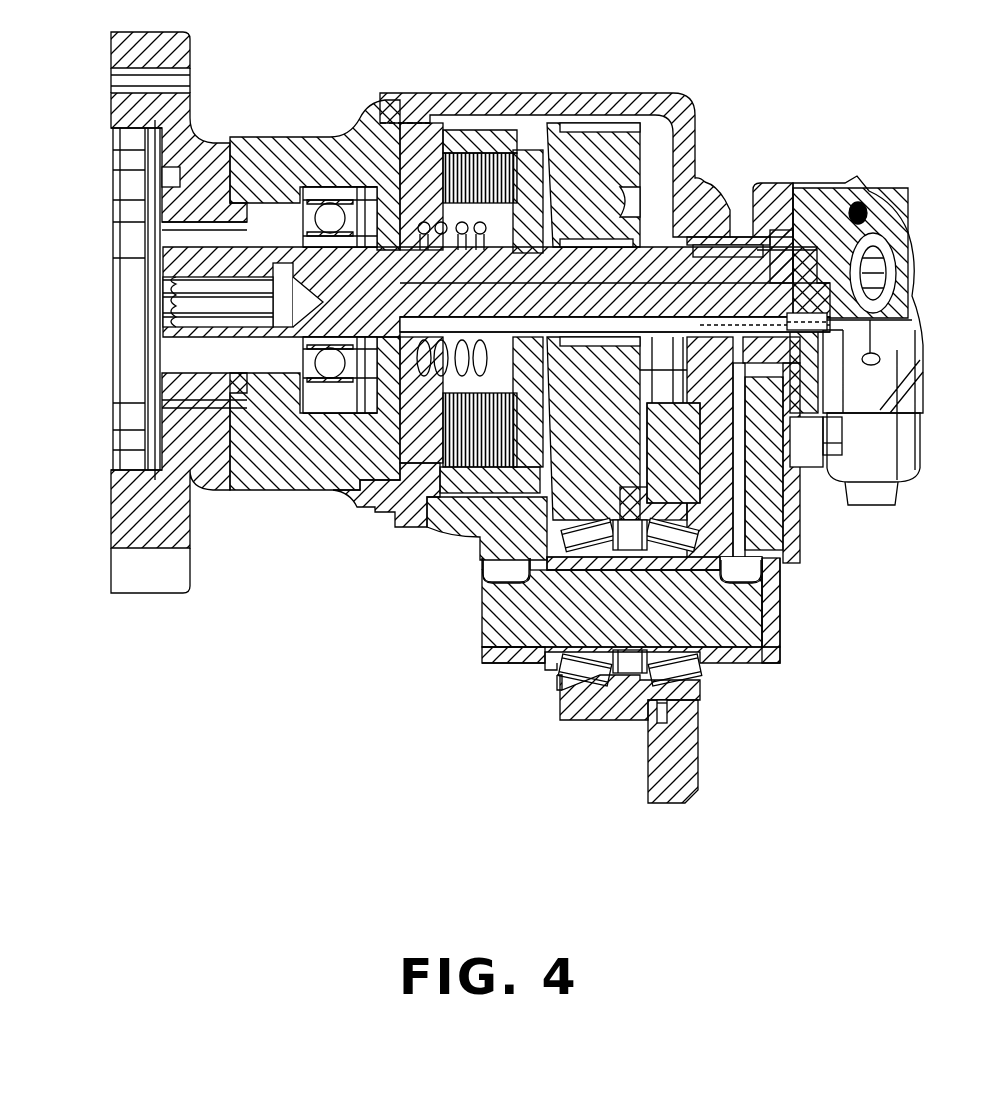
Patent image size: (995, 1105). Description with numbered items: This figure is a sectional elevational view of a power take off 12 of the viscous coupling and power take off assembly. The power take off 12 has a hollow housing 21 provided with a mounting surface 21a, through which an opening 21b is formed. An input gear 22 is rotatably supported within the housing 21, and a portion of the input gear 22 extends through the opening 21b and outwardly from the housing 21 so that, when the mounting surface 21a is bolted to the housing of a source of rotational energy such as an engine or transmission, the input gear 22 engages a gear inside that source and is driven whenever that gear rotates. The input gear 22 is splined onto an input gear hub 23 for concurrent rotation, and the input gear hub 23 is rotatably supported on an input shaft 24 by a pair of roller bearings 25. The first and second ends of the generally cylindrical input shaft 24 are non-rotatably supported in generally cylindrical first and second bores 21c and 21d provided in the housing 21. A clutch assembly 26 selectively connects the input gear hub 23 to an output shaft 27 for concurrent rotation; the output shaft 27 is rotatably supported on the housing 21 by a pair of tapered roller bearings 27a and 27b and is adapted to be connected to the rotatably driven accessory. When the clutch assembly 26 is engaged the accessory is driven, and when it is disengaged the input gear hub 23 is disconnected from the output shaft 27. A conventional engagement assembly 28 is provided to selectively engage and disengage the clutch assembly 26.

The power take off 12 is at (832, 82).
The power take off housing 21 is at (640, 98).
The mounting surface 21a is at (762, 665).
The opening 21b is at (553, 672).
The first bore 21c is at (483, 581).
The second bore 21d is at (740, 590).
The input gear 22 is at (690, 770).
The input gear hub 23 is at (607, 705).
The input shaft 24 is at (740, 618).
The roller bearings 25 is at (573, 667).
The clutch assembly 26 is at (520, 115).
The output shaft 27 is at (172, 280).
The tapered roller bearing 27a is at (330, 210).
The tapered roller bearing 27b is at (742, 250).
The engagement assembly 28 is at (887, 158).